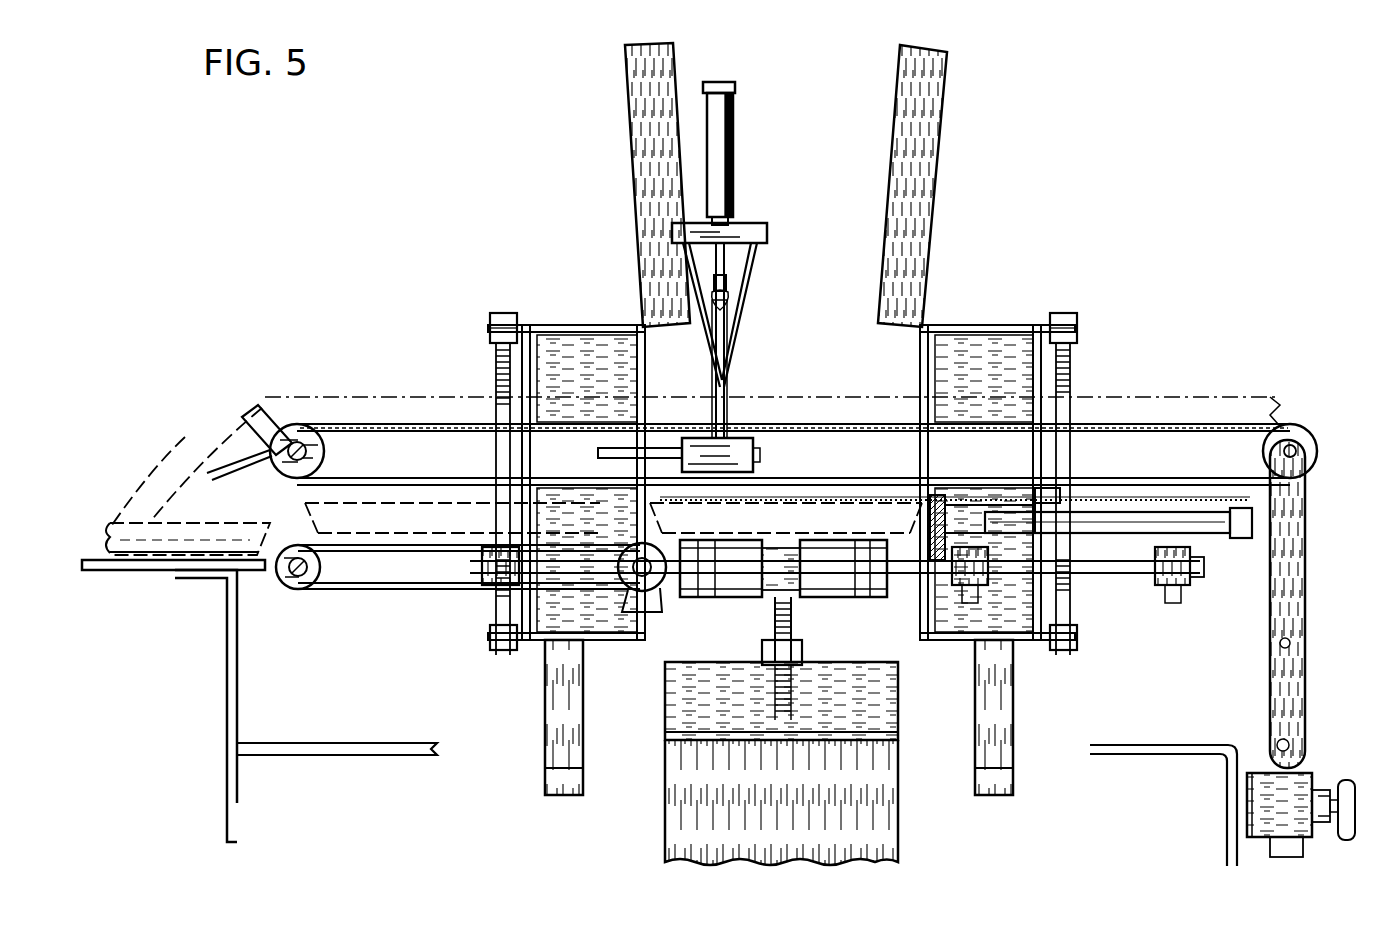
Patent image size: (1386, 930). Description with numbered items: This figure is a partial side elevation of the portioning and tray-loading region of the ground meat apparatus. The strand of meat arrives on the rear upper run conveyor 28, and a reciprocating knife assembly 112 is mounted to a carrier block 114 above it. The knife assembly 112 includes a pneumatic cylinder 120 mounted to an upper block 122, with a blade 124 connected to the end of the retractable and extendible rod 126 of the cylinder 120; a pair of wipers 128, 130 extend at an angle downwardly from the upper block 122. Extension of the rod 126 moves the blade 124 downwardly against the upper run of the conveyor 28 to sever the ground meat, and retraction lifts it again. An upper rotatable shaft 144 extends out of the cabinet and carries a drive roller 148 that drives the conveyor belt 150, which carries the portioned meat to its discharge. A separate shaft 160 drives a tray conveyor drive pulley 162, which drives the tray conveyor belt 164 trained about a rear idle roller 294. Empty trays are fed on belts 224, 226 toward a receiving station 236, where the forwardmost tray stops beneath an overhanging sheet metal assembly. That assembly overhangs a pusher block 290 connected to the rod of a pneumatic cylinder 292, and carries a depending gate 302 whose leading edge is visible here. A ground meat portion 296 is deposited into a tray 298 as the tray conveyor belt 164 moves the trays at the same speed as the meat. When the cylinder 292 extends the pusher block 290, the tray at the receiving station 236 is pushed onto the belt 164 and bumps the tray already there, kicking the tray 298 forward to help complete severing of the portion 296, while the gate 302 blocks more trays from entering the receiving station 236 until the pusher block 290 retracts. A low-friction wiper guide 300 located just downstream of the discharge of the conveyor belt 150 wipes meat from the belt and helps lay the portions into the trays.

The rear upper run conveyor 28 is at (1308, 425).
The reciprocating knife assembly 112 is at (747, 260).
The carrier block 114 is at (760, 455).
The pneumatic cylinder 120 is at (738, 155).
The upper block 122 is at (768, 226).
The blade 124 is at (730, 372).
The retractable and extendible rod 126 is at (728, 284).
The wiper 128 is at (700, 335).
The wiper 130 is at (742, 322).
The upper rotatable shaft 144 is at (326, 452).
The drive roller 148 is at (407, 484).
The conveyor belt 150 is at (825, 439).
The shaft 160 is at (285, 590).
The tray conveyor drive pulley 162 is at (320, 572).
The tray conveyor belt 164 is at (446, 601).
The belt 224 is at (690, 598).
The belt 226 is at (868, 598).
The receiving station 236 is at (904, 565).
The pusher block 290 is at (940, 496).
The pneumatic cylinder 292 is at (1086, 515).
The rear idle roller 294 is at (628, 585).
The ground meat portion 296 is at (182, 436).
The tray 298 is at (212, 522).
The wiper guide 300 is at (262, 440).
The depending gate 302 is at (915, 530).